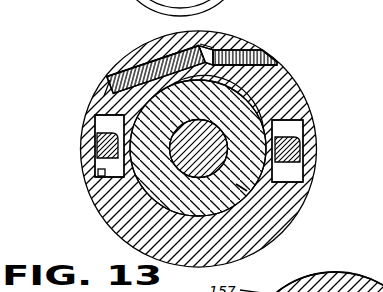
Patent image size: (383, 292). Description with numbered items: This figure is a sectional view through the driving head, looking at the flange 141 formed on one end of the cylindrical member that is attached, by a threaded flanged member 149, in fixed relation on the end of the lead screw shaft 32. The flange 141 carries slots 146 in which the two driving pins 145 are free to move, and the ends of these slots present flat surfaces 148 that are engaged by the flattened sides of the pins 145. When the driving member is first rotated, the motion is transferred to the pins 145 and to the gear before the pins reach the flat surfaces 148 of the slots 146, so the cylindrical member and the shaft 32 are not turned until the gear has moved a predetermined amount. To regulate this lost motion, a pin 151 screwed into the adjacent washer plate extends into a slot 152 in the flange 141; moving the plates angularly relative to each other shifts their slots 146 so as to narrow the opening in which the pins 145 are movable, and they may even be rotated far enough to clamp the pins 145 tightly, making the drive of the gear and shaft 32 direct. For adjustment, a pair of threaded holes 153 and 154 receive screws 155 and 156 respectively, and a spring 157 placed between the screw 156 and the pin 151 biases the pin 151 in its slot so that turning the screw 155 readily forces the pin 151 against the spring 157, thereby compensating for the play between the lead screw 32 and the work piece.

The shaft 32 is at (110, 206).
The flange 141 is at (297, 101).
The driving pins 145 is at (100, 148).
The slots 146 is at (97, 125).
The flat surfaces 148 is at (96, 173).
The threaded flanged member 149 is at (239, 188).
The pin 151 is at (208, 42).
The slot 152 is at (193, 46).
The threaded hole 153 is at (108, 86).
The threaded hole 154 is at (274, 59).
The screw 155 is at (126, 70).
The screw 156 is at (253, 49).
The spring 157 is at (145, 53).